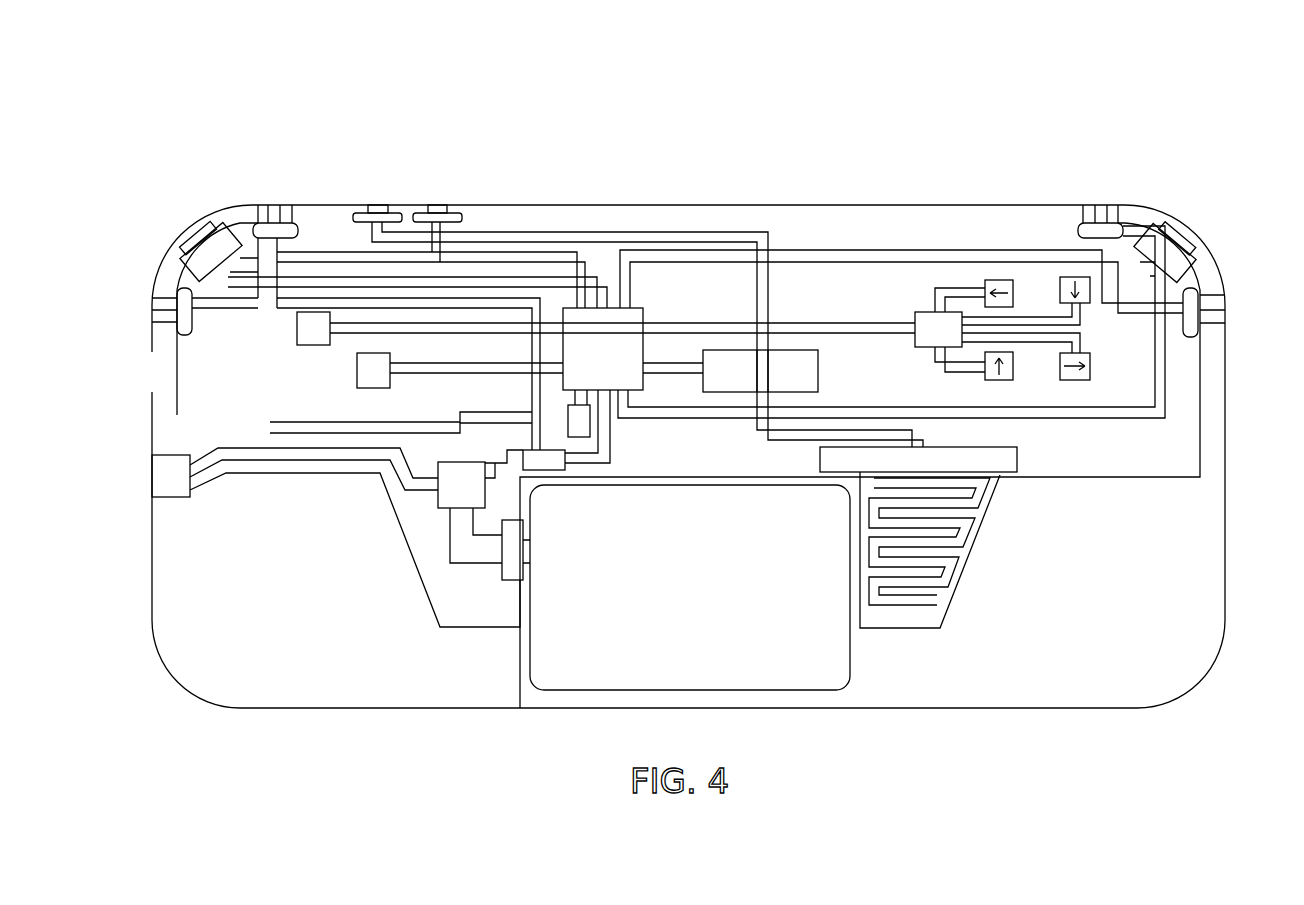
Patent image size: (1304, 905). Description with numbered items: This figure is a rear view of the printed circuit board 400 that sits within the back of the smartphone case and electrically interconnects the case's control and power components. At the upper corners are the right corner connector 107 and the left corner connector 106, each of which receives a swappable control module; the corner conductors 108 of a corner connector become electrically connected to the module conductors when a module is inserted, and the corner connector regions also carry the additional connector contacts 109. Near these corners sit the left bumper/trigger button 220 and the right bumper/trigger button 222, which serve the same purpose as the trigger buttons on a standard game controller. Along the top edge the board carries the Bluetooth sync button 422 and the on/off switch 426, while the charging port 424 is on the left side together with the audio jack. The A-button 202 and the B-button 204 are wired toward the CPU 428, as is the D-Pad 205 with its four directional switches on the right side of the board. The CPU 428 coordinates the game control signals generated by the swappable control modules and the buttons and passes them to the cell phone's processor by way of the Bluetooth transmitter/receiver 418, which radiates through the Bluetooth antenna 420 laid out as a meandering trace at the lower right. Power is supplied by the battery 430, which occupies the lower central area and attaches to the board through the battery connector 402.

The printed circuit board 400 is at (1062, 150).
The right corner connector 107 is at (185, 218).
The left corner connector 106 is at (1187, 210).
The left connector 109 is at (275, 205).
The corner conductors 108 is at (1100, 205).
The left bumper/trigger button 220 is at (184, 245).
The right bumper/trigger button 222 is at (1200, 270).
The Bluetooth sync button 422 is at (378, 205).
The on/off switch 426 is at (437, 205).
The charging port 424 is at (152, 477).
The battery connector 402 is at (517, 580).
The A-button 202 is at (297, 330).
The B-button 204 is at (375, 388).
The CPU 428 is at (645, 310).
The Bluetooth transmitter/receiver 418 is at (818, 372).
The D-Pad 205 is at (912, 292).
The battery 430 is at (690, 587).
The Bluetooth antenna 420 is at (992, 542).